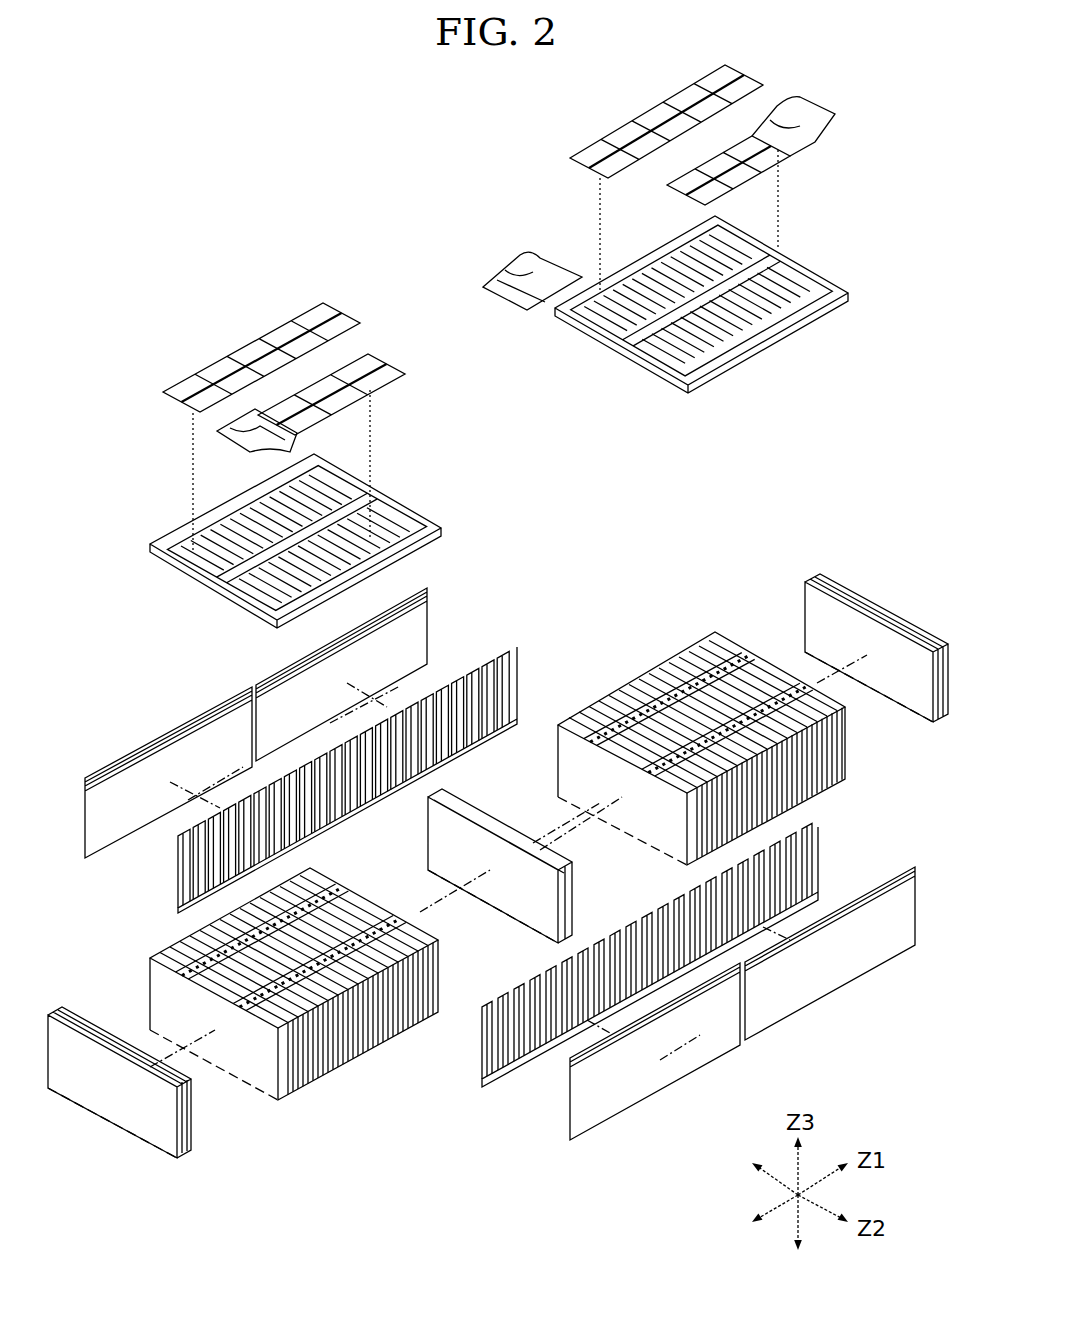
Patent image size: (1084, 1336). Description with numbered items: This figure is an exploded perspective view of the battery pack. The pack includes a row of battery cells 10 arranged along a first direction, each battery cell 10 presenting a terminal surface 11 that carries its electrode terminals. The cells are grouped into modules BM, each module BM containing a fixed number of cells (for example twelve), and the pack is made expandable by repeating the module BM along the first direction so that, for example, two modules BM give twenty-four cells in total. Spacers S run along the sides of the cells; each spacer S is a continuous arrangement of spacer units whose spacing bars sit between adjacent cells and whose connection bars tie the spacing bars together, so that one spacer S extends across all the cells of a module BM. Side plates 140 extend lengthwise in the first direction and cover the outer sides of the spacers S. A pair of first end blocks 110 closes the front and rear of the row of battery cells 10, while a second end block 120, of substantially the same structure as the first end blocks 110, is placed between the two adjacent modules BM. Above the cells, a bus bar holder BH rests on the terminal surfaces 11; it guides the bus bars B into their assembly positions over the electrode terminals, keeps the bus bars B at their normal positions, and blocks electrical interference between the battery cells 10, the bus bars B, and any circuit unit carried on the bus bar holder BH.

The battery cell 10 is at (465, 866).
The terminal surface 11 is at (350, 890).
The first end block 110 is at (141, 1154).
The second end block 120 is at (497, 912).
The side plate 140 is at (443, 614).
The spacer S is at (534, 669).
The module BM is at (497, 866).
The bus bar holder BH is at (192, 602).
The bus bar B is at (325, 306).